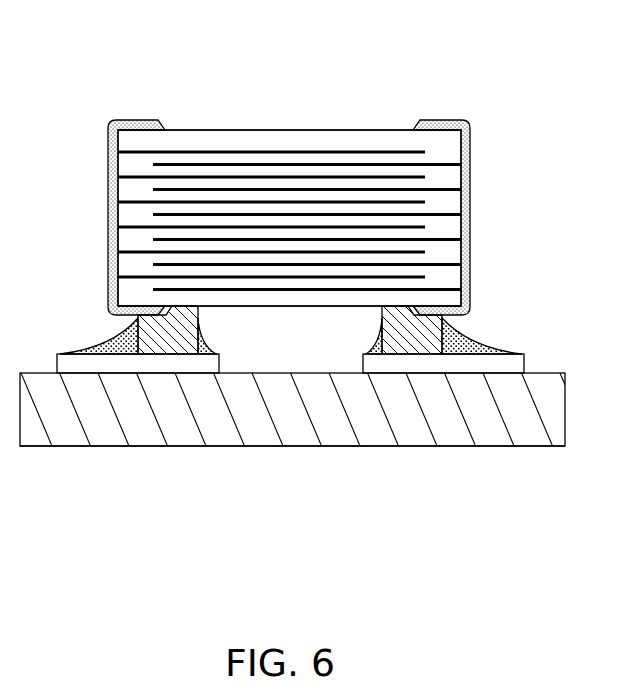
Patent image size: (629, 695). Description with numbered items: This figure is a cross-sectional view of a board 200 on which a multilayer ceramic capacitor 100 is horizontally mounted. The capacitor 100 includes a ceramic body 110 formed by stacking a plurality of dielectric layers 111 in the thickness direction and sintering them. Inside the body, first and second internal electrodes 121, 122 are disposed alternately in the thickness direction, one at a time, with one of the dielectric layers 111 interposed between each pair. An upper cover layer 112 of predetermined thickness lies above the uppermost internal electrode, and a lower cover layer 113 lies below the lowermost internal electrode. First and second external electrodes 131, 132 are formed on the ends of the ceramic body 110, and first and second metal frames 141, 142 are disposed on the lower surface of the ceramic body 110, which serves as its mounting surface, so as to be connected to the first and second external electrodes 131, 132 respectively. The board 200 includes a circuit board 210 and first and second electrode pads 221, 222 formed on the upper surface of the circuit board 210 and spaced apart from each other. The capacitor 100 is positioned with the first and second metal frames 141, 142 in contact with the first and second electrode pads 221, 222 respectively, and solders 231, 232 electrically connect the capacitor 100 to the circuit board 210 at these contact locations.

The multilayer ceramic capacitor 100 is at (260, 168).
The ceramic body 110 is at (336, 130).
The dielectric layers 111 is at (425, 180).
The upper cover layer 112 is at (258, 130).
The lower cover layer 113 is at (272, 300).
The first internal electrode 121 is at (191, 130).
The second internal electrode 122 is at (443, 163).
The first external electrode 131 is at (131, 120).
The second external electrode 132 is at (440, 120).
The first metal frame 141 is at (150, 330).
The second metal frame 142 is at (418, 327).
The board 200 is at (415, 530).
The circuit board 210 is at (307, 418).
The first electrode pad 221 is at (190, 365).
The second electrode pad 222 is at (420, 365).
The solder 231 is at (113, 345).
The solder 232 is at (473, 343).